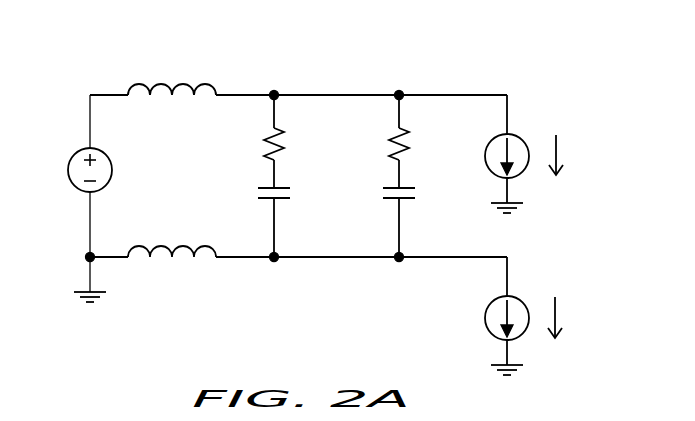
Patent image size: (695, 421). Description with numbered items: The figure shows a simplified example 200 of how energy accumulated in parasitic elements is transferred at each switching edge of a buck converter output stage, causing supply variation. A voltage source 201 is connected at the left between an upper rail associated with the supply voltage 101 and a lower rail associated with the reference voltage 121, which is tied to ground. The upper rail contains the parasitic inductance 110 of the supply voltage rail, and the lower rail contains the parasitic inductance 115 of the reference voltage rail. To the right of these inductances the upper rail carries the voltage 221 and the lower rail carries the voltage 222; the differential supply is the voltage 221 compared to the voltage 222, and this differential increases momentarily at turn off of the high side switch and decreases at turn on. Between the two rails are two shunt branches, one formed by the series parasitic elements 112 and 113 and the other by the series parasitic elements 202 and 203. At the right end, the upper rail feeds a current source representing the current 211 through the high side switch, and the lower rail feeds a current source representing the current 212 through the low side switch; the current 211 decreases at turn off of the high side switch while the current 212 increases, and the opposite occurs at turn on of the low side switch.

The supply voltage 101 is at (104, 94).
The parasitic inductance 110 is at (181, 82).
The voltage 221 is at (344, 94).
The simplified example 200 is at (432, 74).
The voltage source 201 is at (104, 158).
The reference voltage 121 is at (86, 253).
The parasitic inductance 115 is at (180, 244).
The voltage 222 is at (343, 262).
The parasitic element 112 is at (286, 136).
The parasitic element 113 is at (283, 203).
The parasitic element 202 is at (410, 136).
The parasitic element 203 is at (408, 203).
The current 211 is at (560, 158).
The current 212 is at (558, 320).